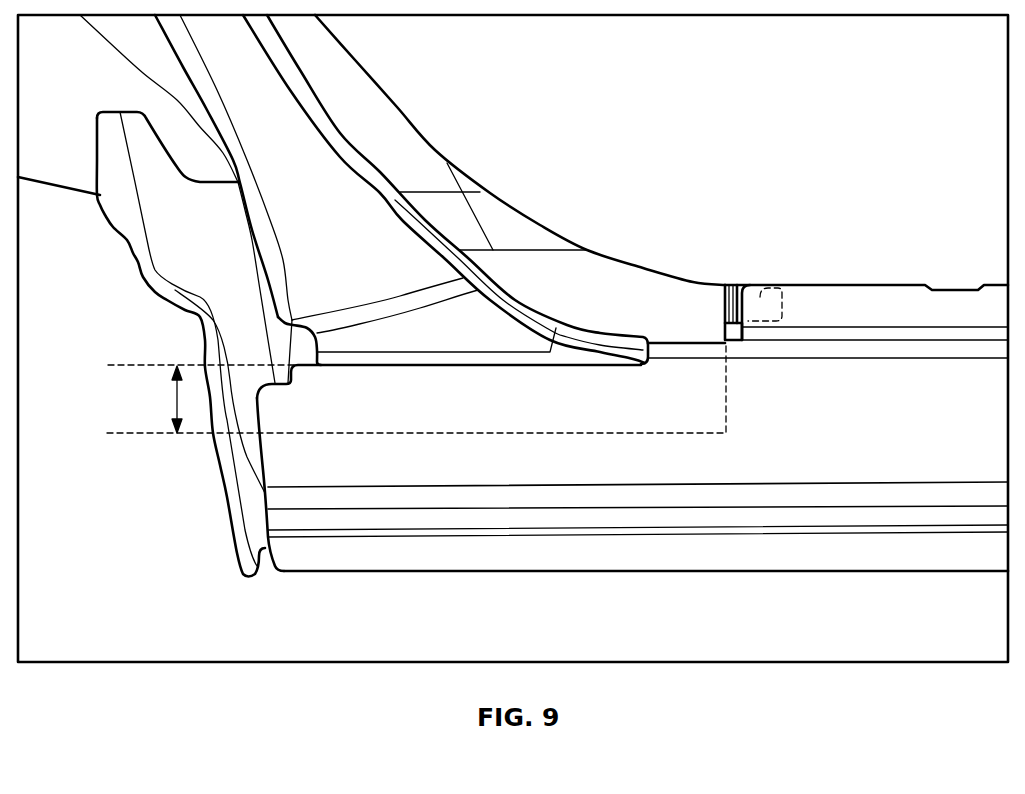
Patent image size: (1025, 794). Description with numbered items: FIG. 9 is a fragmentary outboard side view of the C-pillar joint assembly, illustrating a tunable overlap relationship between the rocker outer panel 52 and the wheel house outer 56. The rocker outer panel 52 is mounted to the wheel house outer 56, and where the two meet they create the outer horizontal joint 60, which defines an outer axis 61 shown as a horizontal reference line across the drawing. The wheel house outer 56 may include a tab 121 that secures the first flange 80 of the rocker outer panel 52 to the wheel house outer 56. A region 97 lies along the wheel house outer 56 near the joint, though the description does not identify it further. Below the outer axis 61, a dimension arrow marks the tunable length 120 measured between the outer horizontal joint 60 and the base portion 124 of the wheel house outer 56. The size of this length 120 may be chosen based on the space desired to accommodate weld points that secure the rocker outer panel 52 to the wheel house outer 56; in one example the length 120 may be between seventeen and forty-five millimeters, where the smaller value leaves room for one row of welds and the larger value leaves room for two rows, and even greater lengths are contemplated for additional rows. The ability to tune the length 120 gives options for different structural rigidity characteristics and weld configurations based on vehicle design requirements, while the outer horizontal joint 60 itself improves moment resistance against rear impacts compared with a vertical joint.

The rocker outer panel 52 is at (793, 572).
The wheel house outer 56 is at (397, 108).
The outer horizontal joint 60 is at (513, 364).
The outer axis 61 is at (147, 363).
The first flange 80 is at (903, 284).
The attachment region 97 is at (458, 250).
The length 120 is at (176, 400).
The tab 121 is at (760, 297).
The base portion 124 is at (283, 437).